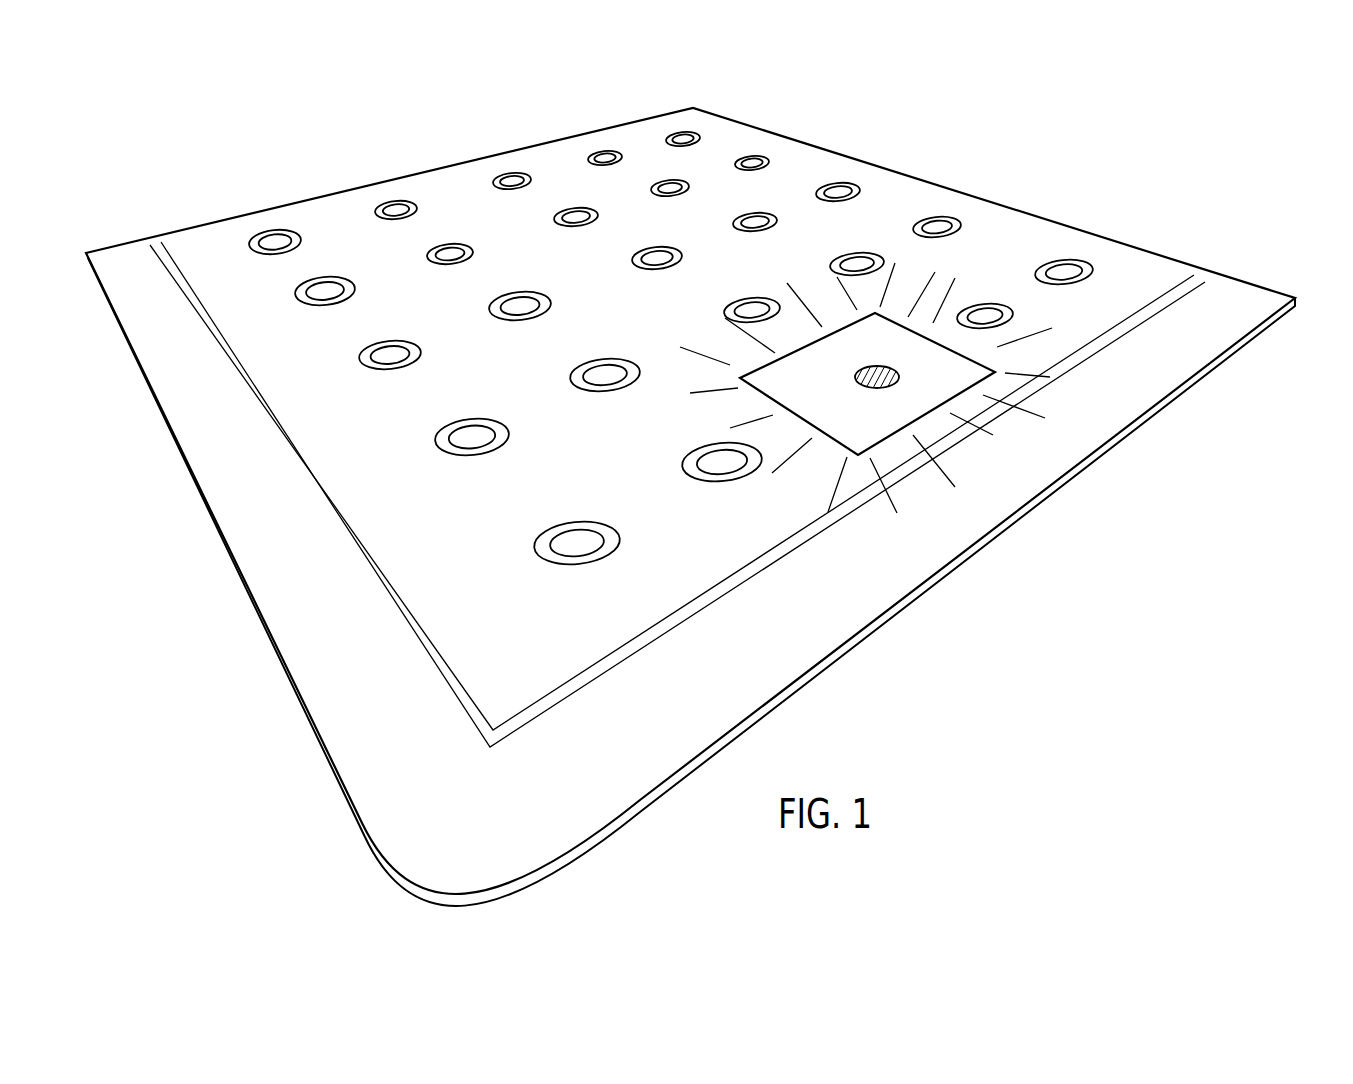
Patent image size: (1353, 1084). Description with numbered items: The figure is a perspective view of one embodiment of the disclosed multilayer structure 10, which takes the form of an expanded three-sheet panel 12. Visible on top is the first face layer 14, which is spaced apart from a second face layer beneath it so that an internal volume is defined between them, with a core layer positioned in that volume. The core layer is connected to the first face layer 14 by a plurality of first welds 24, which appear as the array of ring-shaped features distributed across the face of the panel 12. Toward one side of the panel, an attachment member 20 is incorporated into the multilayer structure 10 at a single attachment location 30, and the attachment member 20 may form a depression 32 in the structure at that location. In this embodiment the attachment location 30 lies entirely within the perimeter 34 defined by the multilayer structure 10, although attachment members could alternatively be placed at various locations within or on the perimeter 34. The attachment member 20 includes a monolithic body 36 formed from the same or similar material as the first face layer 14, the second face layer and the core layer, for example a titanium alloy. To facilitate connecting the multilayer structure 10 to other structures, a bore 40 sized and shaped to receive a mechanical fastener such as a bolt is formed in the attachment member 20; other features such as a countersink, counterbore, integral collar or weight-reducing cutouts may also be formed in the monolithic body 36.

The multilayer structure 10 is at (995, 136).
The expanded three-sheet panel 12 is at (1021, 193).
The first face layer 14 is at (460, 384).
The attachment member 20 is at (950, 383).
The first welds 24 is at (766, 218).
The attachment location 30 is at (931, 296).
The depression 32 is at (975, 342).
The perimeter 34 is at (1091, 470).
The monolithic body 36 is at (806, 404).
The bore 40 is at (856, 375).